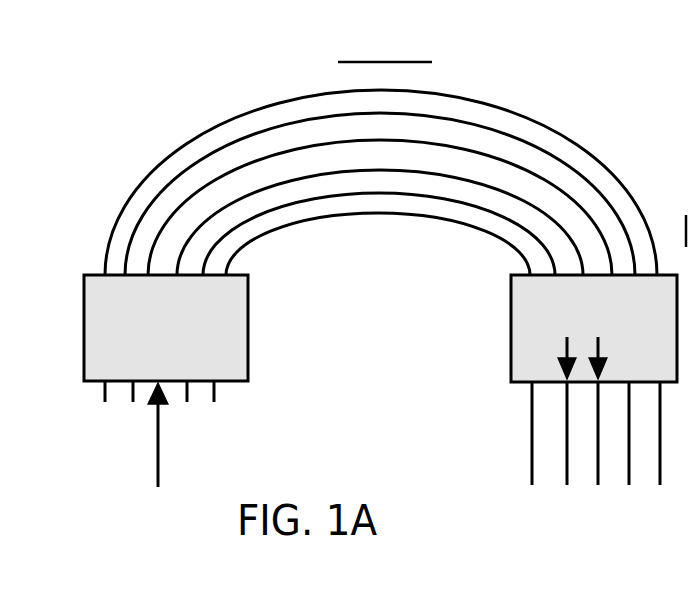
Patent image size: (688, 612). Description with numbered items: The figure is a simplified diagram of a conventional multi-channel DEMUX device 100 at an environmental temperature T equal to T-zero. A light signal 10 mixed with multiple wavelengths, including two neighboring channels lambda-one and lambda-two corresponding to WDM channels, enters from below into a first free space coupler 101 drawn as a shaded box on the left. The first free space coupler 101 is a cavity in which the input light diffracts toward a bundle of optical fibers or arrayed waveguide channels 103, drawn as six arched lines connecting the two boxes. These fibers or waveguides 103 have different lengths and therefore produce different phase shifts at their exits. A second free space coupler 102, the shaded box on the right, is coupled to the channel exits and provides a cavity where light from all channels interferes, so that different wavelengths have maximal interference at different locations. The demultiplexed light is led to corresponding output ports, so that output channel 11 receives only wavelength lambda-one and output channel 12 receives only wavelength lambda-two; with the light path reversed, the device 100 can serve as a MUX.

The multi-channel DEMUX device 100 is at (203, 66).
The first free space coupler 101 is at (247, 358).
The second free space coupler 102 is at (510, 328).
The bundle of optical fibers or arrayed waveguide channels 103 is at (383, 205).
The light signal 10 is at (158, 447).
The output channel 11 is at (567, 470).
The output channel 12 is at (598, 478).